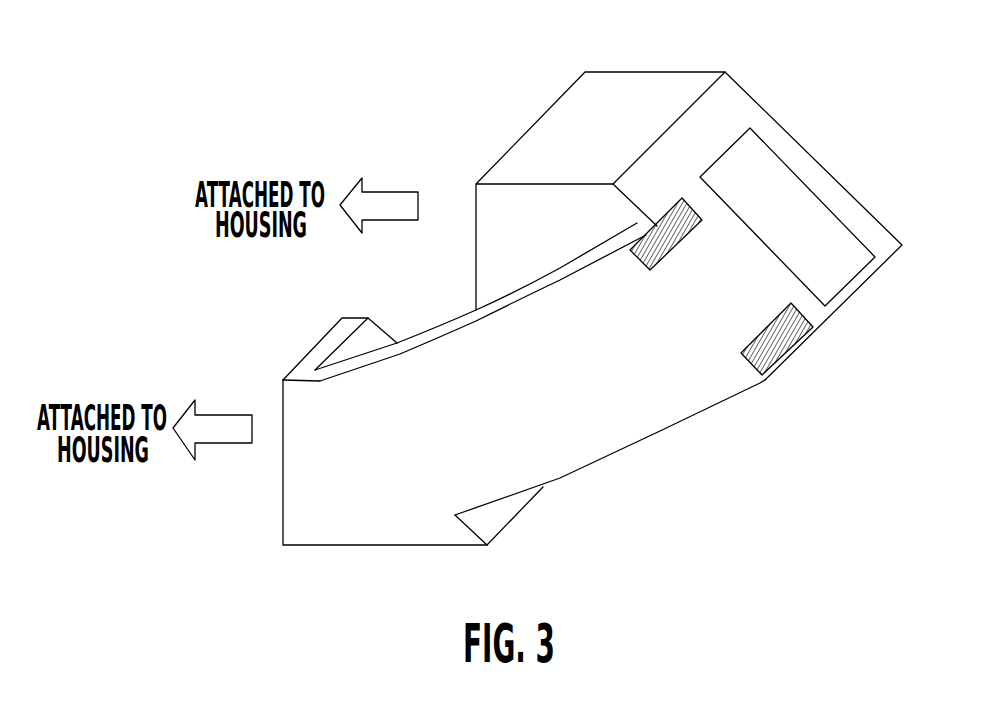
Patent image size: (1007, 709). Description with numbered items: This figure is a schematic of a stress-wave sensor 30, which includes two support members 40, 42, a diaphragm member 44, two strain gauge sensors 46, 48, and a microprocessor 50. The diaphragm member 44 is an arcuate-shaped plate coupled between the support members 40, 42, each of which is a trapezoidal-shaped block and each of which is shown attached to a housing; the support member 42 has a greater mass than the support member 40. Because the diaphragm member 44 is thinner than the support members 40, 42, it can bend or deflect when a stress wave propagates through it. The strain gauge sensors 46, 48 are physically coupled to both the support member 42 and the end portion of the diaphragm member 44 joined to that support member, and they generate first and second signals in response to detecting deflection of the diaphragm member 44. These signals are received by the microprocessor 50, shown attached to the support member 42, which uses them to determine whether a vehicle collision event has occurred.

The stress-wave sensor 30 is at (802, 98).
The support member 40 is at (320, 360).
The support member 42 is at (612, 90).
The diaphragm member 44 is at (590, 375).
The strain gauge sensor 46 is at (686, 224).
The strain gauge sensor 48 is at (801, 331).
The microprocessor 50 is at (810, 203).